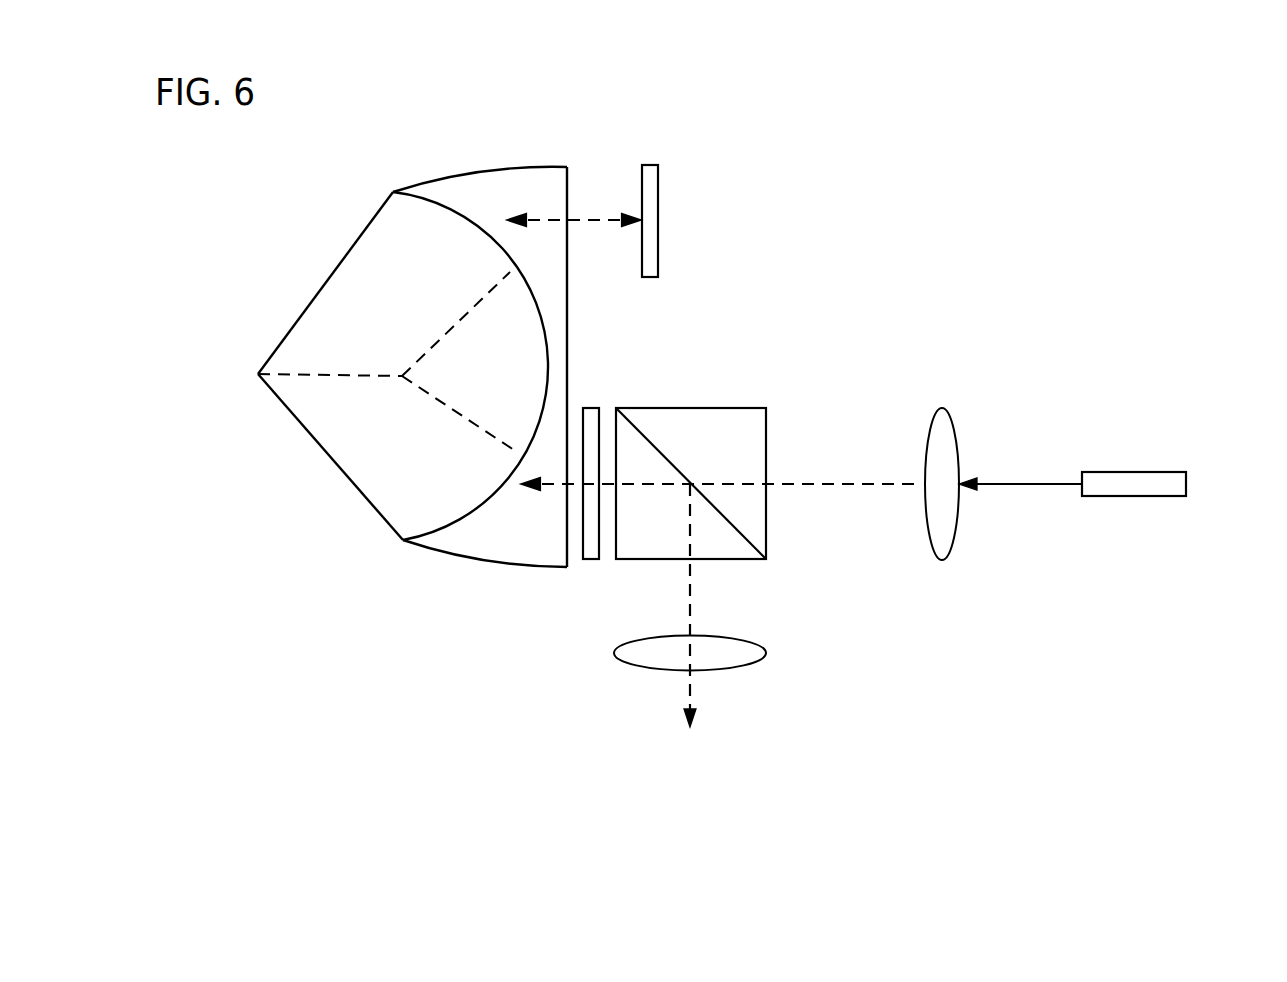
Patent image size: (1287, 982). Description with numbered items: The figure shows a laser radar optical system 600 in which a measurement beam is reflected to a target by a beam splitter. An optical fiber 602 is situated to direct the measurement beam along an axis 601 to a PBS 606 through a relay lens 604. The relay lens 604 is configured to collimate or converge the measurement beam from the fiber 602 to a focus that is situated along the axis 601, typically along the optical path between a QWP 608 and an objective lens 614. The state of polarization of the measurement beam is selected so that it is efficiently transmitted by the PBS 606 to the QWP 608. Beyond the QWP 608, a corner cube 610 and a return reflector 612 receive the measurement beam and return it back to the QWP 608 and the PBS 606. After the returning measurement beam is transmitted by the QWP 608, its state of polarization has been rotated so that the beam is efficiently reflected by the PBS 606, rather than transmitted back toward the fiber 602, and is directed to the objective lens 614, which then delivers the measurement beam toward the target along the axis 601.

The laser radar optical system 600 is at (863, 262).
The axis 601 is at (693, 686).
The optical fiber 602 is at (1165, 472).
The relay lens 604 is at (950, 412).
The PBS 606 is at (730, 406).
The QWP 608 is at (590, 406).
The corner cube 610 is at (355, 483).
The return reflector 612 is at (650, 163).
The objective lens 614 is at (738, 638).